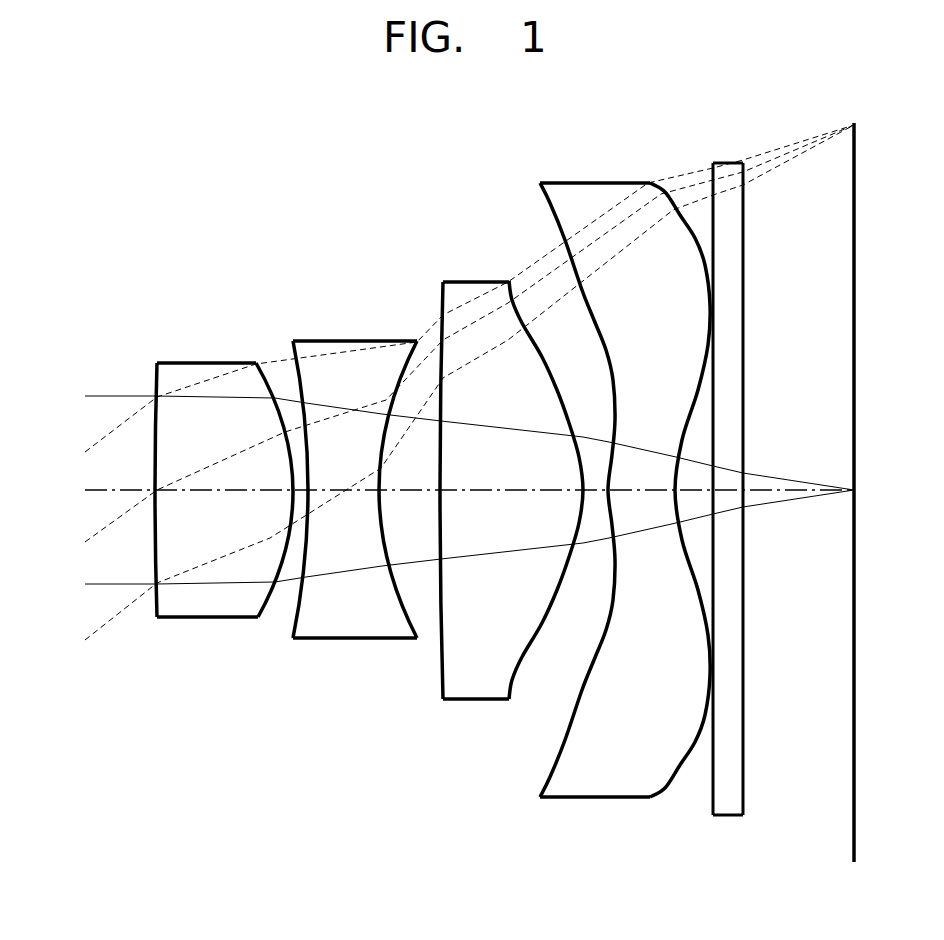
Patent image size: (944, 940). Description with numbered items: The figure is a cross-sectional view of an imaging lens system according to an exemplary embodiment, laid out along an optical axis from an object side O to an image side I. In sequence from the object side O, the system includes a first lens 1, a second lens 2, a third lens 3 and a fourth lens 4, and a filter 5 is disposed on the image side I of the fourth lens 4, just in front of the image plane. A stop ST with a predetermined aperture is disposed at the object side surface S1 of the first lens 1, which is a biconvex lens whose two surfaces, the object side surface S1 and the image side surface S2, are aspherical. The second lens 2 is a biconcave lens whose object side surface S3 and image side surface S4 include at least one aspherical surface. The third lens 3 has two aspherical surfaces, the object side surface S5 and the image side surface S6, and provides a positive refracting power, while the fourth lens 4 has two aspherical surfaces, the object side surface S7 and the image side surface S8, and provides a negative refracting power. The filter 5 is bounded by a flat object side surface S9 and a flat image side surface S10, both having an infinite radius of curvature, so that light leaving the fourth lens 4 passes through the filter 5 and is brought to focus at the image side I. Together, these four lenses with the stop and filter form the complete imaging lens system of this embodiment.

The first lens 1 is at (205, 517).
The second lens 2 is at (344, 495).
The third lens 3 is at (501, 508).
The fourth lens 4 is at (604, 505).
The filter 5 is at (745, 491).
The object side surface of the first lens (stop ST) S1 is at (157, 617).
The image side surface of the first lens S2 is at (262, 605).
The object side surface of the second lens S3 is at (300, 590).
The image side surface of the second lens S4 is at (396, 583).
The object side surface of the third lens S5 is at (443, 655).
The image side surface of the third lens S6 is at (522, 655).
The object side surface of the fourth lens S7 is at (553, 772).
The image side surface of the fourth lens S8 is at (662, 791).
The object side surface of the filter S9 is at (713, 790).
The image side surface of the filter S10 is at (743, 790).
The image side I is at (872, 492).
The object side O is at (41, 491).